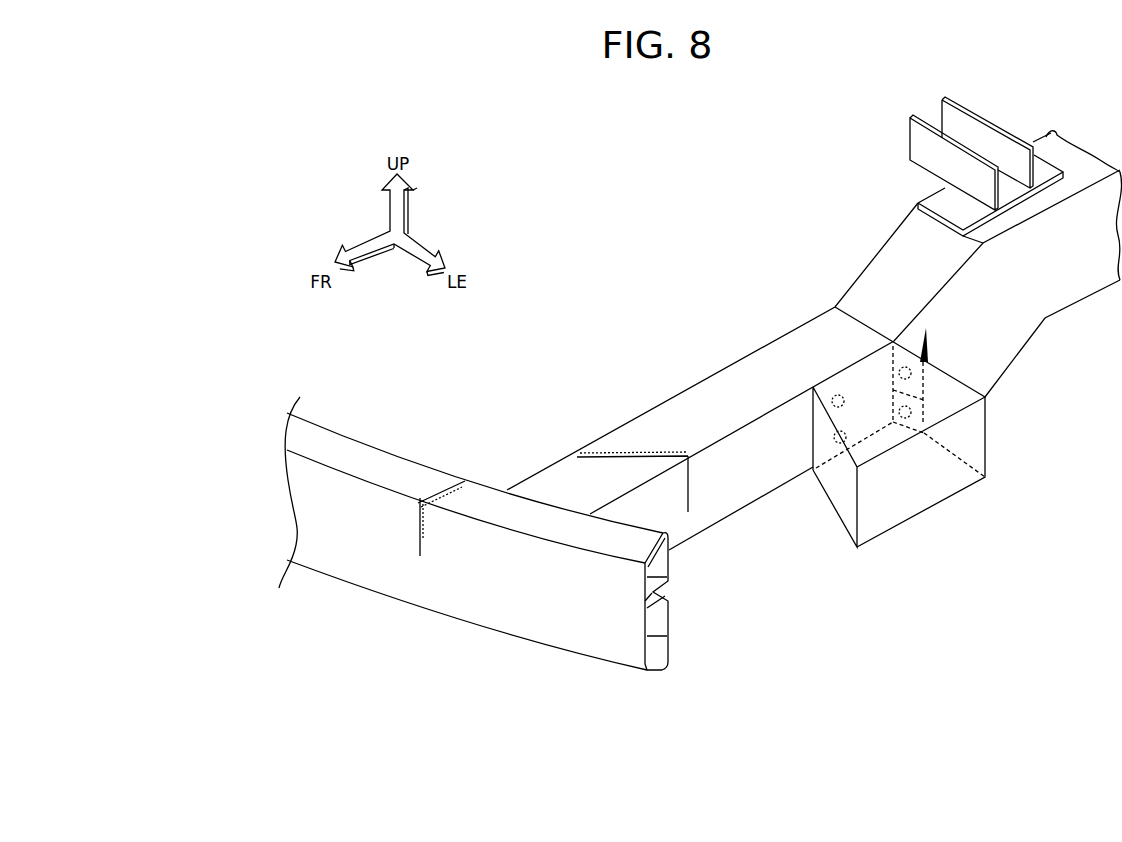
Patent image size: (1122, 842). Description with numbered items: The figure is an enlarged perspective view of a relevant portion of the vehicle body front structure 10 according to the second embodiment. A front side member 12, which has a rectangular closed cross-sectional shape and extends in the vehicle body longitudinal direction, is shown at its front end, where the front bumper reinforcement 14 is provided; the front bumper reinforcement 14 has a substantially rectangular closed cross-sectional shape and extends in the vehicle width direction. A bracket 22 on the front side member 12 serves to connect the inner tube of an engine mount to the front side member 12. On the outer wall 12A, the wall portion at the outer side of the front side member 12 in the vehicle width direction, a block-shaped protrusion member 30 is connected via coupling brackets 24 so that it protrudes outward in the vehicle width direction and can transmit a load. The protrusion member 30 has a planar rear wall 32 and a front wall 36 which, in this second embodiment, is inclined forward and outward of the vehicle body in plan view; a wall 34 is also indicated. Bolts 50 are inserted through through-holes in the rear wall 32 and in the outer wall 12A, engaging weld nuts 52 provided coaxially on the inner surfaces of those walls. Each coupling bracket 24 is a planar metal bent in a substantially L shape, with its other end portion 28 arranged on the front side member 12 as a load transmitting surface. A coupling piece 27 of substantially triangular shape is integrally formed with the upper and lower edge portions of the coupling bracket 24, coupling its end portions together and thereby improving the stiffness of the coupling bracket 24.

The vehicle body structure 10 is at (902, 556).
The front side member 12 is at (650, 406).
The outer wall 12A is at (720, 497).
The front bumper reinforcement 14 is at (507, 607).
The bracket 22 is at (936, 213).
The coupling bracket 24 is at (904, 338).
The coupling piece 27 is at (908, 333).
The other end portion (load transmitting surface) 28 is at (928, 334).
The protrusion member 30 is at (941, 504).
The rear wall 32 is at (955, 430).
The back wall of bracket 34 is at (818, 428).
The front wall 36 is at (837, 488).
The bolt 50 is at (834, 394).
The weld nut 52 is at (897, 367).